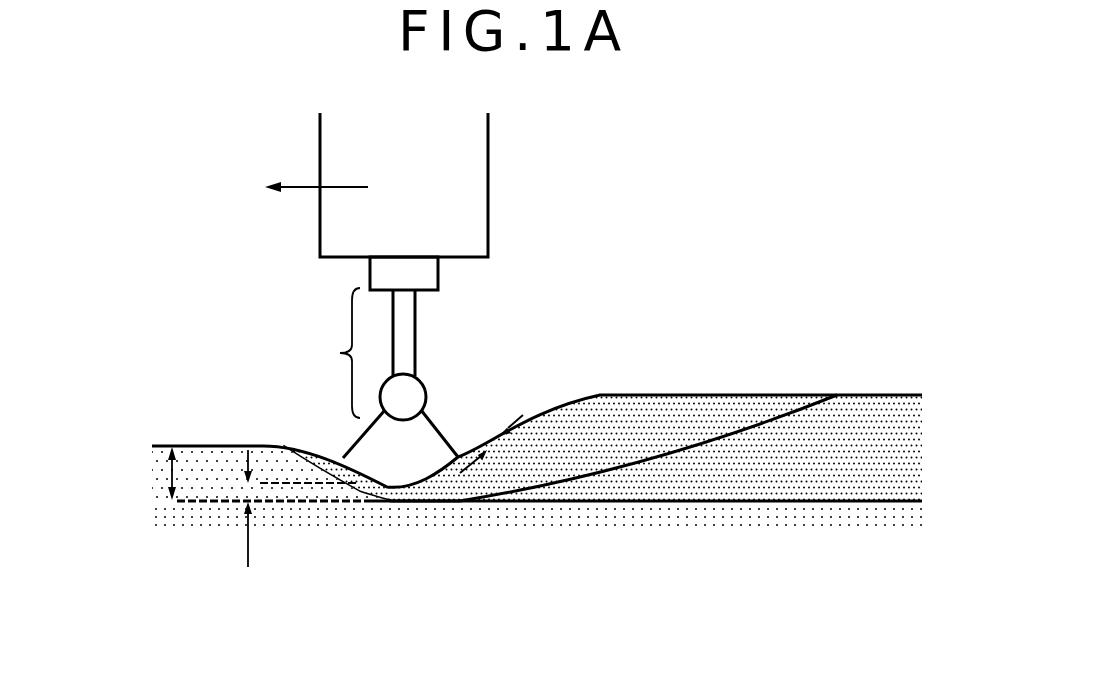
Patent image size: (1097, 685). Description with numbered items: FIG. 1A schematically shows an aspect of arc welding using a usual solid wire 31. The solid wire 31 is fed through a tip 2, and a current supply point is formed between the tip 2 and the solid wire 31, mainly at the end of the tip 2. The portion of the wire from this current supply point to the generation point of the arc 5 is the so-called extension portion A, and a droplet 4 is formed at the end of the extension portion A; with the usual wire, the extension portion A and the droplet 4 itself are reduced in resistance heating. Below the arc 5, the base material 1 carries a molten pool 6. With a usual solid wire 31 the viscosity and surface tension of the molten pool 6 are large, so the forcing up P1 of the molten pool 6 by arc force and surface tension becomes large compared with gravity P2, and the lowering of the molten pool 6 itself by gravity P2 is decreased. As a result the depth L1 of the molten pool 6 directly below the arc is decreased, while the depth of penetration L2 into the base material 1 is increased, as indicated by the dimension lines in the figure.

The base material (workpiece) 1 is at (732, 512).
The tip 2 is at (438, 272).
The solid wire 31 is at (415, 318).
The droplet 4 is at (426, 386).
The arc 5 is at (440, 422).
The molten pool 6 is at (652, 393).
The extension portion A is at (334, 353).
The depth of the molten pool directly below arc L1 is at (250, 550).
The depth of penetration L2 is at (170, 474).
The forcing up of the molten pool P1 is at (482, 460).
The gravity P2 is at (522, 433).